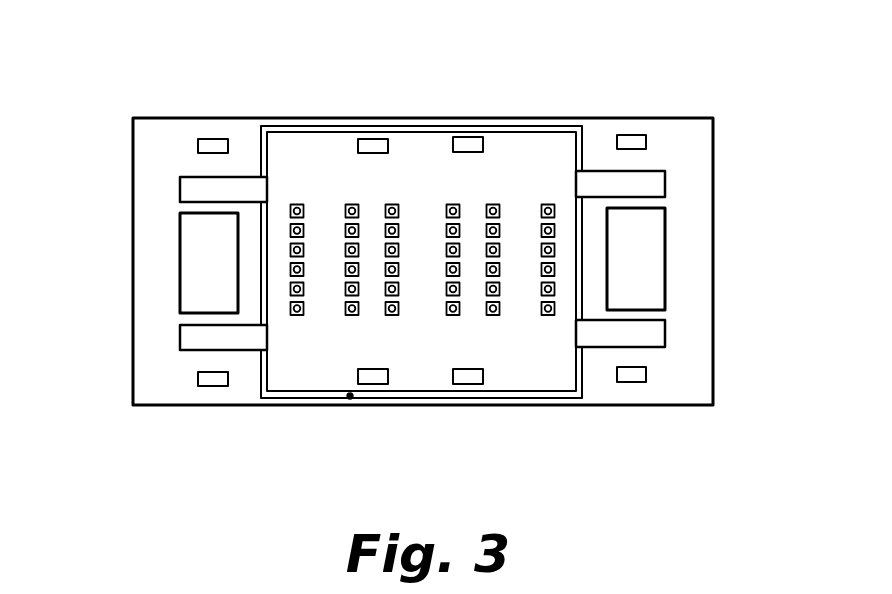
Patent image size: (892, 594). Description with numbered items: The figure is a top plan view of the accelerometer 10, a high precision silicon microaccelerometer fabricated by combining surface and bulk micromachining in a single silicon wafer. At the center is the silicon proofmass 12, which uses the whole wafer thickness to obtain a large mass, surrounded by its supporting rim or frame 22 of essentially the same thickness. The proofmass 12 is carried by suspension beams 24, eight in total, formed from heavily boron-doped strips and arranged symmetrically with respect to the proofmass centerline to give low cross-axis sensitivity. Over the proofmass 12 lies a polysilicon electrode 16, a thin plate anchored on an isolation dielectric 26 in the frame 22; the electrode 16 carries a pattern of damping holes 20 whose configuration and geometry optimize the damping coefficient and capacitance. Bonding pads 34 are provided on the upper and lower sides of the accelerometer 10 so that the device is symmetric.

The accelerometer 10 is at (425, 245).
The proofmass 12 is at (247, 263).
The polysilicon electrodes 16 is at (349, 399).
The damping holes 20 is at (345, 270).
The frame 22 is at (713, 311).
The suspension beams 24 is at (200, 203).
The isolation dielectric 26 is at (293, 126).
The bonding pads 34 is at (226, 138).